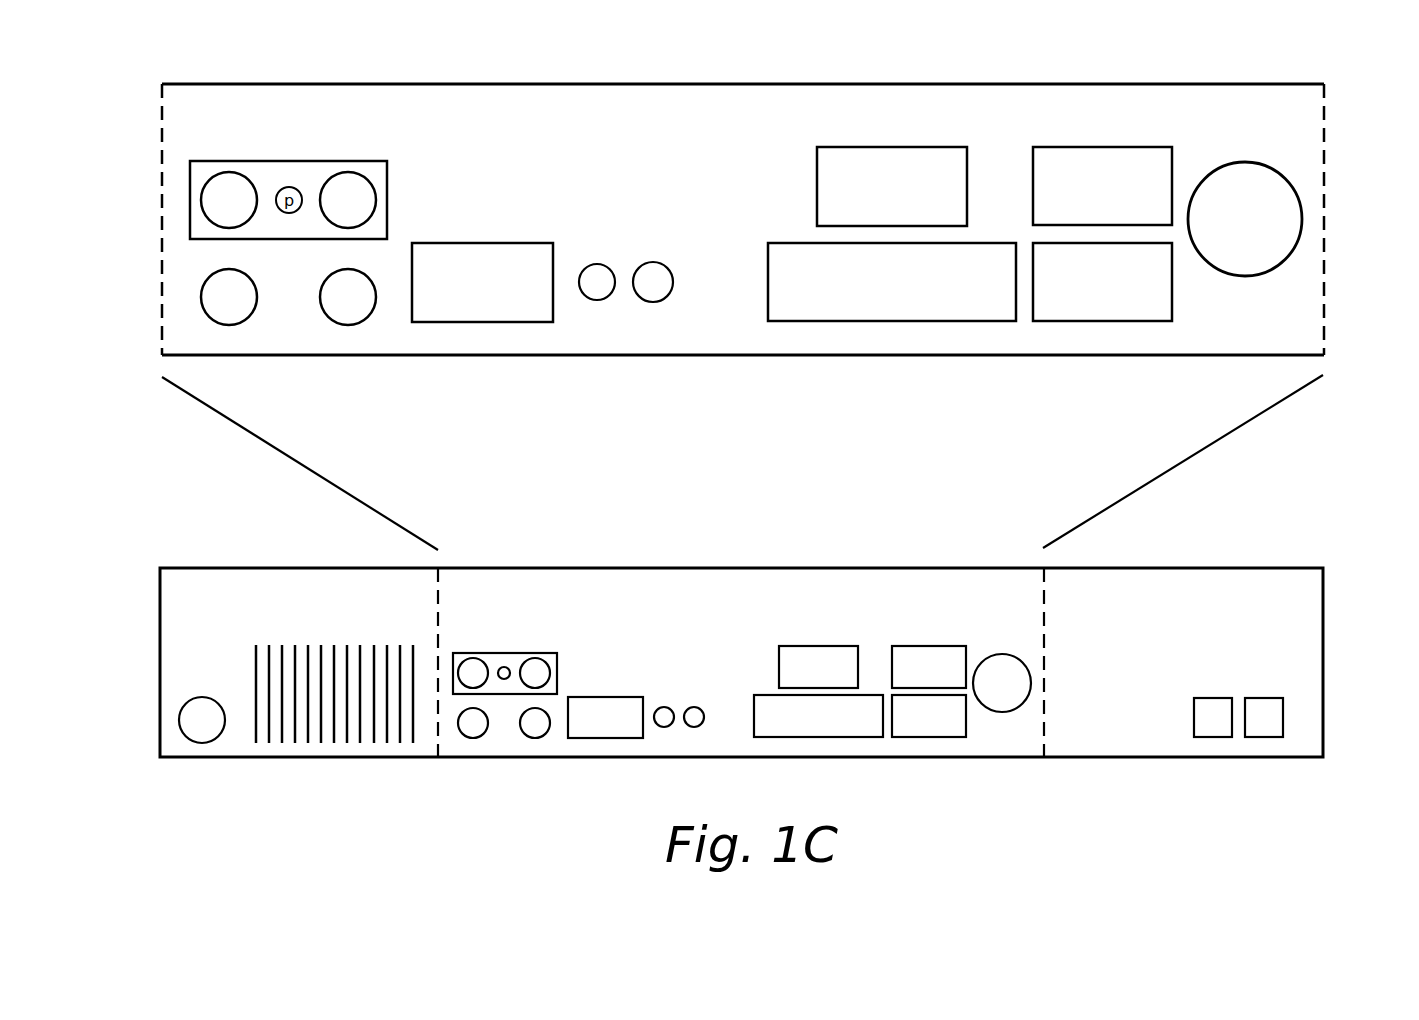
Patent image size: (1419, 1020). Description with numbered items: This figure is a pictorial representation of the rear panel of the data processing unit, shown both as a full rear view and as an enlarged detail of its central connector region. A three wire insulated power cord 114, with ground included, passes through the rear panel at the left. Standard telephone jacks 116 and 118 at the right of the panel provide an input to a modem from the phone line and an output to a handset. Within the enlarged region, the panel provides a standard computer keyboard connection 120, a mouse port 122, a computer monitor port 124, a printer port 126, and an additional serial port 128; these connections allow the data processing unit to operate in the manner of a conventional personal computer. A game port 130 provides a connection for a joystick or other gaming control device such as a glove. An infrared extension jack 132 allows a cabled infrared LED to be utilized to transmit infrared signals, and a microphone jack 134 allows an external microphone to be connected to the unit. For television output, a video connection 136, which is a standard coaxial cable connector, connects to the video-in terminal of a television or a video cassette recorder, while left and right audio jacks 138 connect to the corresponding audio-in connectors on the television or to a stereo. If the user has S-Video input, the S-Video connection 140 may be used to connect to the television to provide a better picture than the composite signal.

The power cord 114 is at (179, 722).
The telephone jack 116 is at (1222, 654).
The telephone jack 118 is at (1269, 698).
The computer keyboard connection 120 is at (1302, 214).
The mouse port 122 is at (1134, 147).
The computer monitor port 124 is at (930, 147).
The printer port 126 is at (823, 322).
The serial port 128 is at (1087, 322).
The game port 130 is at (513, 243).
The infrared extension jack 132 is at (598, 264).
The microphone jack 134 is at (673, 285).
The video connection 136 is at (376, 199).
The left and right audio jacks 138 is at (207, 224).
The S-Video connection 140 is at (322, 288).